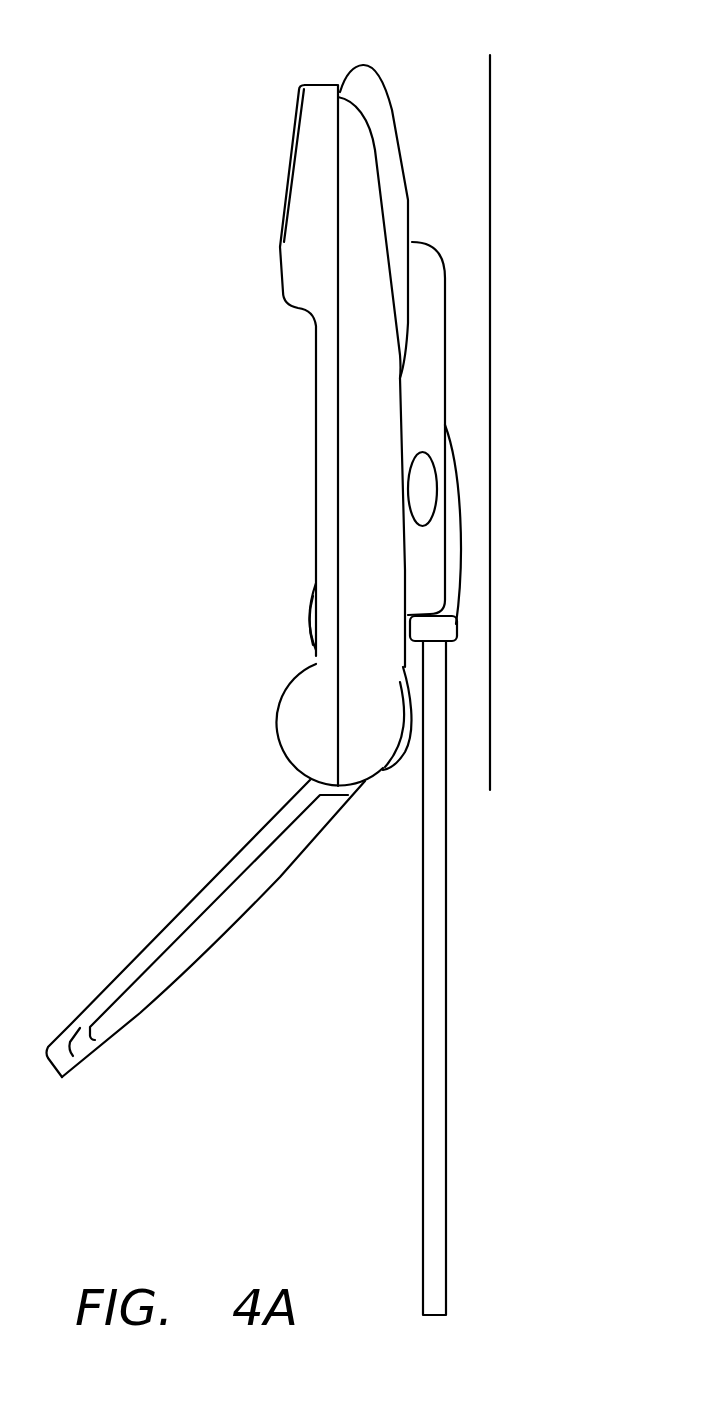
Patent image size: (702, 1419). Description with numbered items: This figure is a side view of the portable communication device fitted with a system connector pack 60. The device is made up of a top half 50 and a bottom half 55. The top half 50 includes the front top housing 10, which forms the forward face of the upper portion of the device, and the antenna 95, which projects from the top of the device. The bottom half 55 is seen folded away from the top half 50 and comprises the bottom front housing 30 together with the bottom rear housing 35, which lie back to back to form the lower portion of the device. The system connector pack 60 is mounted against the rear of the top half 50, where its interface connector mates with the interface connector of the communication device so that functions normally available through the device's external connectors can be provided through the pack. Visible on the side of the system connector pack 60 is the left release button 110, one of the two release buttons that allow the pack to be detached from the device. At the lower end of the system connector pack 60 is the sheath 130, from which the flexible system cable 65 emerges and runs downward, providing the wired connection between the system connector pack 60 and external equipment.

The front top housing 10 is at (303, 236).
The antenna 95 is at (370, 84).
The system connector pack 60 is at (430, 313).
The left release button 110 is at (420, 493).
The sheath 130 is at (452, 629).
The flexible system cable 65 is at (432, 850).
The top half 50 is at (490, 402).
The bottom front housing 30 is at (187, 905).
The bottom half 55 is at (226, 898).
The bottom rear housing 35 is at (118, 1013).